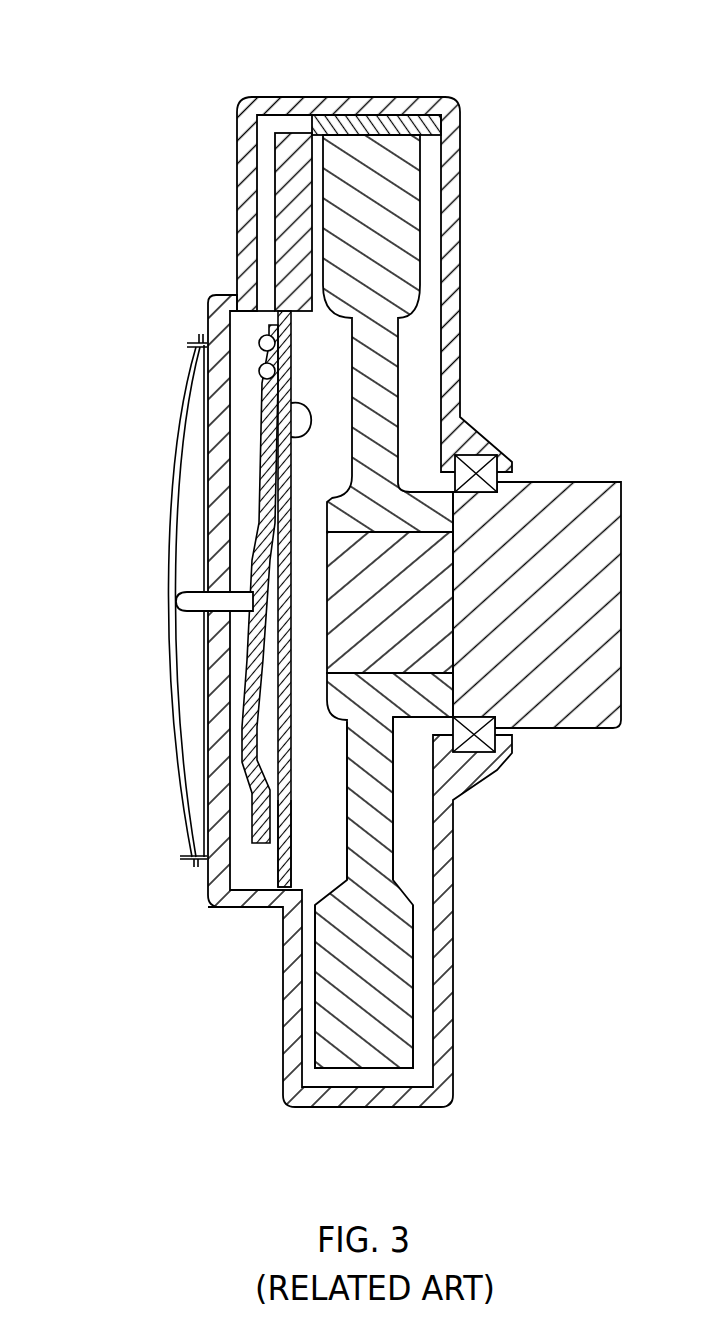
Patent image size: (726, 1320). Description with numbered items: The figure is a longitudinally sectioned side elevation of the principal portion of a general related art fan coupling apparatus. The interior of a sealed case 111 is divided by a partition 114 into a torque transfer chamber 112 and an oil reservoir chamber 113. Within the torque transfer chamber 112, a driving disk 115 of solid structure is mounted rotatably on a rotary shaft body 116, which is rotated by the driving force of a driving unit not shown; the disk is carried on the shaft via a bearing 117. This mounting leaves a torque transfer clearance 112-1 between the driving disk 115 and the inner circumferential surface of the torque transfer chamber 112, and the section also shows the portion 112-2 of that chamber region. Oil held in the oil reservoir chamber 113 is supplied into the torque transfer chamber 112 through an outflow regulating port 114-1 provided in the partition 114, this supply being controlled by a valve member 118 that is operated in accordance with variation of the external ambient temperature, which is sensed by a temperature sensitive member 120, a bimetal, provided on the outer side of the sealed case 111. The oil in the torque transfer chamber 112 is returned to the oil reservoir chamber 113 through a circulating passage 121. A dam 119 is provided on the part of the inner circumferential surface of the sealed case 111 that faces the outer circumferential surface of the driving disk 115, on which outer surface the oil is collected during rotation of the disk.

The sealed case 111 is at (440, 975).
The torque transfer chamber 112 is at (417, 845).
The torque transfer clearance 112-1 is at (420, 1038).
The stem portion of body 112-2 is at (323, 865).
The oil reservoir chamber 113 is at (243, 872).
The partition 114 is at (303, 432).
The outflow regulating port 114-1 is at (287, 820).
The driving disk 115 is at (357, 1012).
The rotary shaft body 116 is at (567, 543).
The bearing 117 is at (492, 703).
The valve member 118 is at (260, 735).
The dam 119 is at (381, 117).
The temperature sensitive member 120 is at (170, 655).
The circulating passage 121 is at (262, 172).